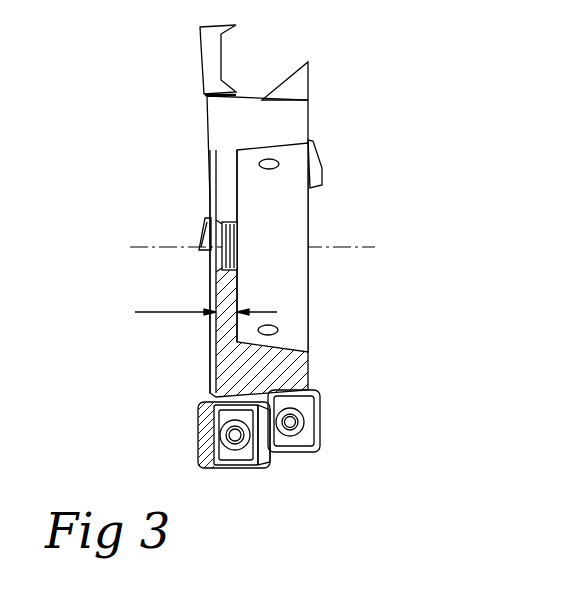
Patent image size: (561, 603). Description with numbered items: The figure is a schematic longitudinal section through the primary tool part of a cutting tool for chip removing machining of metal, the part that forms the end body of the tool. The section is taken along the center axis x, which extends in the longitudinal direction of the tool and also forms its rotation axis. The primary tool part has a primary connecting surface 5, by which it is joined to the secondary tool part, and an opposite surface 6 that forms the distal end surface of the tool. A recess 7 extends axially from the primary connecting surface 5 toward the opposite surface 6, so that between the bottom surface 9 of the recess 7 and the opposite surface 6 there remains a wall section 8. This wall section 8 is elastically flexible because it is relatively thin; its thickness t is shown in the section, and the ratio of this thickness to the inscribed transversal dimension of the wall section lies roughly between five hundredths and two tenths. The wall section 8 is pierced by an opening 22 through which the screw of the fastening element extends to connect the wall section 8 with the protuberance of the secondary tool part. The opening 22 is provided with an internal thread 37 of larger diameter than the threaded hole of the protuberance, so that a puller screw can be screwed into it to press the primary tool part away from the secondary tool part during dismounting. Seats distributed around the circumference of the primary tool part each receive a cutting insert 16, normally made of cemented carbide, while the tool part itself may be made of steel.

The primary connecting surface 5 is at (311, 108).
The opposite surface 6 is at (207, 104).
The recess 7 is at (300, 322).
The wall section 8 is at (223, 180).
The bottom surface 9 is at (238, 197).
The opening 22 is at (217, 256).
The internal thread 37 is at (238, 262).
The cutting insert 16 is at (318, 428).
The center axis x is at (142, 247).
The thickness t is at (163, 318).